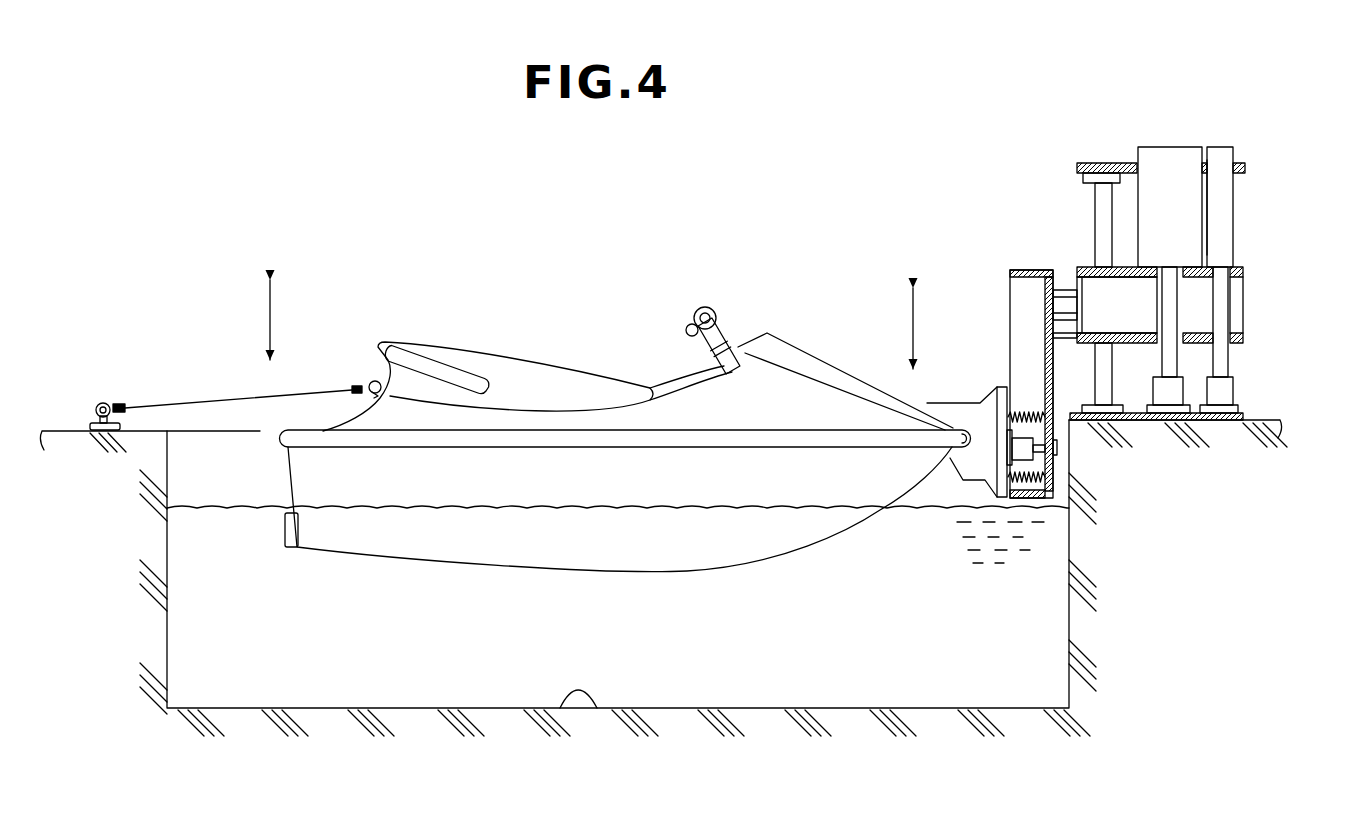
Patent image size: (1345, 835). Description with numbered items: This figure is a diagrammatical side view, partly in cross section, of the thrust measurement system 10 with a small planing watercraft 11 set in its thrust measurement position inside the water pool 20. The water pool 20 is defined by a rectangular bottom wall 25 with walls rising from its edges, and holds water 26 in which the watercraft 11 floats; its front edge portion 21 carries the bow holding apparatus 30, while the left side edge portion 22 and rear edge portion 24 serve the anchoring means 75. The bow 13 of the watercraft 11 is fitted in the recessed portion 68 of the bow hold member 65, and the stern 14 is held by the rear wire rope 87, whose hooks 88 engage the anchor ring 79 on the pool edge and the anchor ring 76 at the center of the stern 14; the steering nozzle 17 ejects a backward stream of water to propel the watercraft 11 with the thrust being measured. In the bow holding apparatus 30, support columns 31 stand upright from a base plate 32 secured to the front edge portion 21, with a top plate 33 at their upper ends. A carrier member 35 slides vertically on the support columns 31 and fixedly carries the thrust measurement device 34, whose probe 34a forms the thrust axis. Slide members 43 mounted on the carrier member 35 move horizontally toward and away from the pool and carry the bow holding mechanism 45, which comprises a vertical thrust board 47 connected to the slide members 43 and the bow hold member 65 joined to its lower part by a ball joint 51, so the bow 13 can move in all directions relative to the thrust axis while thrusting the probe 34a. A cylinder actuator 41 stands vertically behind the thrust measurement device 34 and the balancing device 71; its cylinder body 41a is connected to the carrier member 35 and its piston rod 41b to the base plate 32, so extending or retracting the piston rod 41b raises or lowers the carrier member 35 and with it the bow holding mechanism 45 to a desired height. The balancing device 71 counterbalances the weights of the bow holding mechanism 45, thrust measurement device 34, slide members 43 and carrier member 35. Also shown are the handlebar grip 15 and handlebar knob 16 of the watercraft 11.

The thrust measurement system 10 is at (870, 122).
The small planing watercraft 11 is at (793, 340).
The bow 13 is at (947, 447).
The stern 14 is at (373, 422).
The handlebar grip 15 is at (709, 308).
The handlebar knob 16 is at (688, 322).
The steering nozzle 17 is at (291, 552).
The water pool 20 is at (393, 724).
The front edge portion 21 is at (1270, 415).
The left side edge portion 22 is at (200, 430).
The rear edge portion 24 is at (68, 430).
The bottom wall 25 is at (581, 700).
The water 26 is at (570, 505).
The bow holding apparatus 30 is at (1095, 138).
The support columns 31 is at (1113, 388).
The base plate 32 is at (1180, 393).
The top plate 33 is at (1242, 166).
The thrust measurement device 34 is at (1092, 290).
The probe 34a is at (1047, 303).
The carrier member 35 is at (1240, 268).
The cylinder actuator 41 is at (1218, 155).
The cylinder body 41a is at (1222, 222).
The piston rod 41b is at (1215, 313).
The slide members 43 is at (1058, 460).
The bow holding mechanism 45 is at (1000, 270).
The thrust board 47 is at (1055, 490).
The ball joint 51 is at (1028, 485).
The bow hold member 65 is at (977, 473).
The recessed portion 68 is at (952, 403).
The balancing device 71 is at (1163, 160).
The anchoring means 75 is at (300, 268).
The anchor ring 76 is at (404, 355).
The anchor ring 79 is at (100, 403).
The rear wire rope 87 is at (240, 397).
The hooks 88 is at (108, 403).